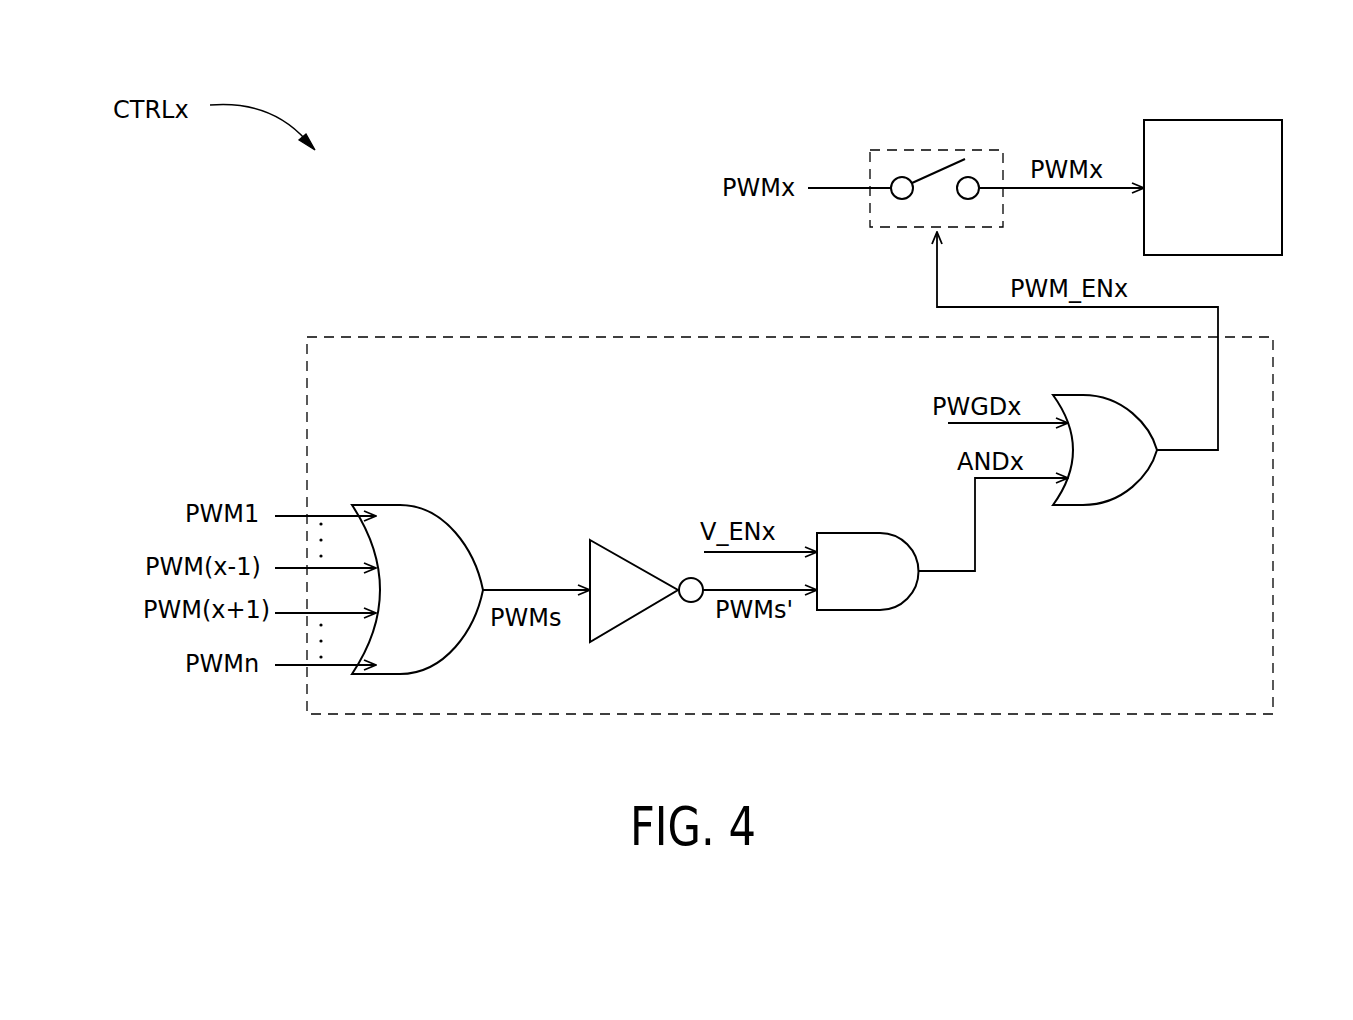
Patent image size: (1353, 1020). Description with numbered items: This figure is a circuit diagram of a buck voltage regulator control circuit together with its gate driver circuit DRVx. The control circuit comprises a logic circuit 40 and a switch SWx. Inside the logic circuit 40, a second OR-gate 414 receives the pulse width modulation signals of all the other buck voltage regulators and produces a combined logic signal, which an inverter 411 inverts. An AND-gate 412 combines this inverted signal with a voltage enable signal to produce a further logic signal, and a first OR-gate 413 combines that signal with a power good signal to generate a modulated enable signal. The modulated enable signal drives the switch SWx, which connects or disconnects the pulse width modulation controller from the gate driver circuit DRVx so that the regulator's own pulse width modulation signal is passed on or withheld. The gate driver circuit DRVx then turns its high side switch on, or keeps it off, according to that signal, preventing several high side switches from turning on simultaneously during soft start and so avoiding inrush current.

The logic circuit 40 is at (347, 337).
The inverter 411 is at (618, 552).
The AND-gate 412 is at (853, 533).
The first OR-gate 413 is at (1148, 423).
The second OR-gate 414 is at (455, 537).
The switch SWx is at (955, 150).
The gate driver circuit DRVx is at (1215, 120).